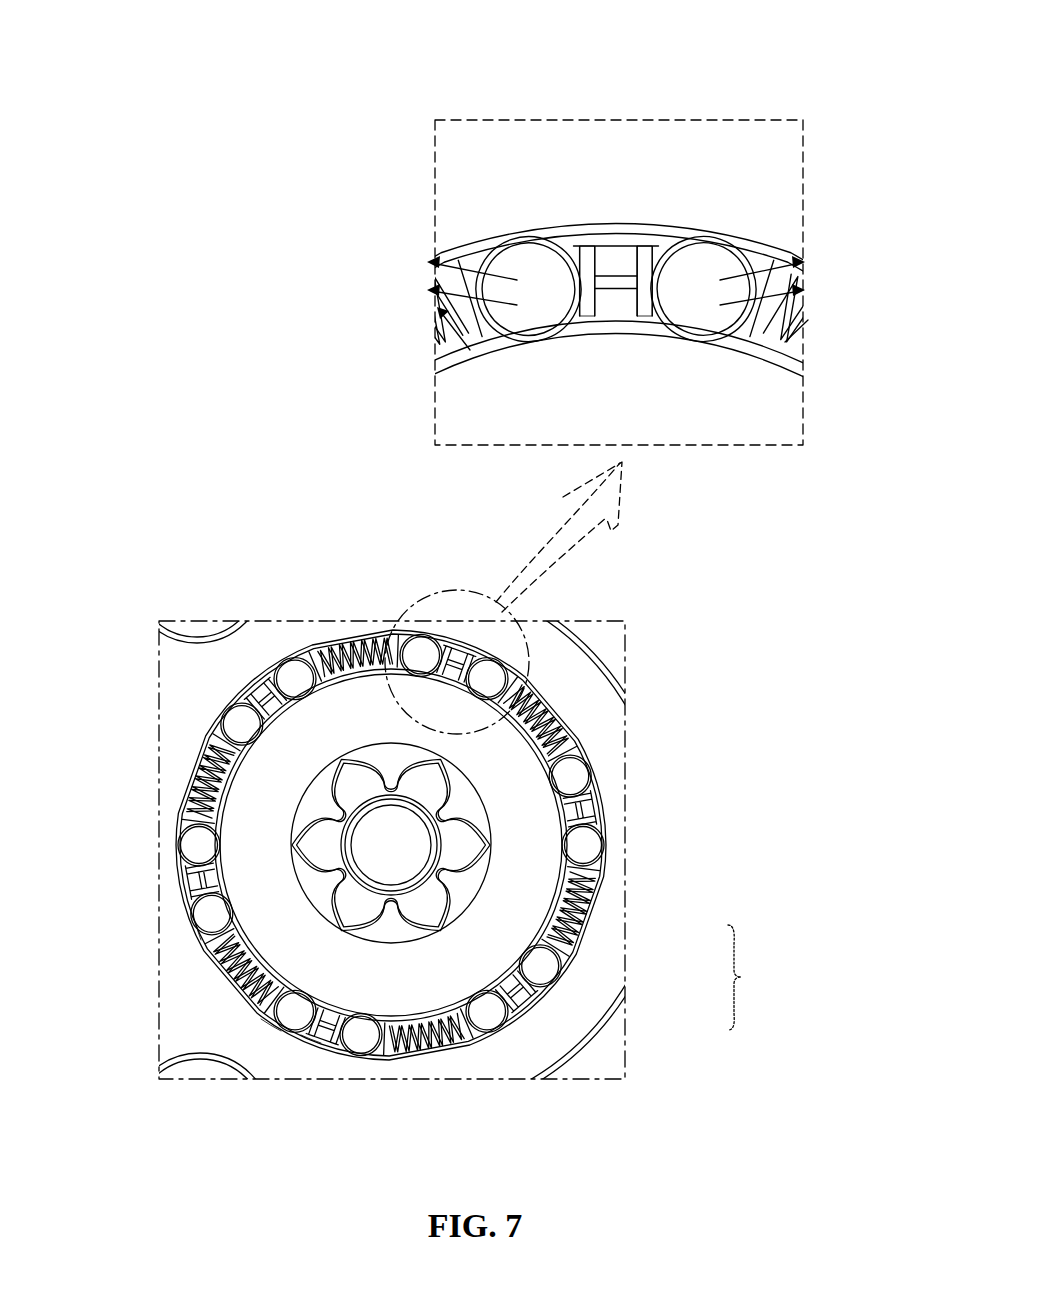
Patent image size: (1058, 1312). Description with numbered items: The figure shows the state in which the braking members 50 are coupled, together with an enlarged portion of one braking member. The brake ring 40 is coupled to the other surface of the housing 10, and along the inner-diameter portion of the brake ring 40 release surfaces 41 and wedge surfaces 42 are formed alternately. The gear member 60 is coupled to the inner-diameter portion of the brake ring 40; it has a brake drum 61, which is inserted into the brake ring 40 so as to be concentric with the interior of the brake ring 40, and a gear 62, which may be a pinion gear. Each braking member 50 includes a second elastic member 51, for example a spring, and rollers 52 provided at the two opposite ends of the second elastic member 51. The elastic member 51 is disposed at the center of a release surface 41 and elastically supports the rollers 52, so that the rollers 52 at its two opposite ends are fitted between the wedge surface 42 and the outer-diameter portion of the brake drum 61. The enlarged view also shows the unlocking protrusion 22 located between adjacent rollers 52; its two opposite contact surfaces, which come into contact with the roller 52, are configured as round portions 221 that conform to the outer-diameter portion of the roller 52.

The housing 10 is at (608, 640).
The unlocking protrusion 22 is at (625, 292).
The round portions 221 is at (568, 290).
The brake ring 40 is at (628, 714).
The release surfaces 41 is at (257, 1007).
The wedge surfaces 42 is at (210, 930).
The braking members 50 is at (753, 977).
The second elastic member 51 is at (548, 966).
The rollers 52 is at (592, 918).
The gear member 60 is at (302, 810).
The brake drum 61 is at (530, 830).
The gear 62 is at (313, 856).